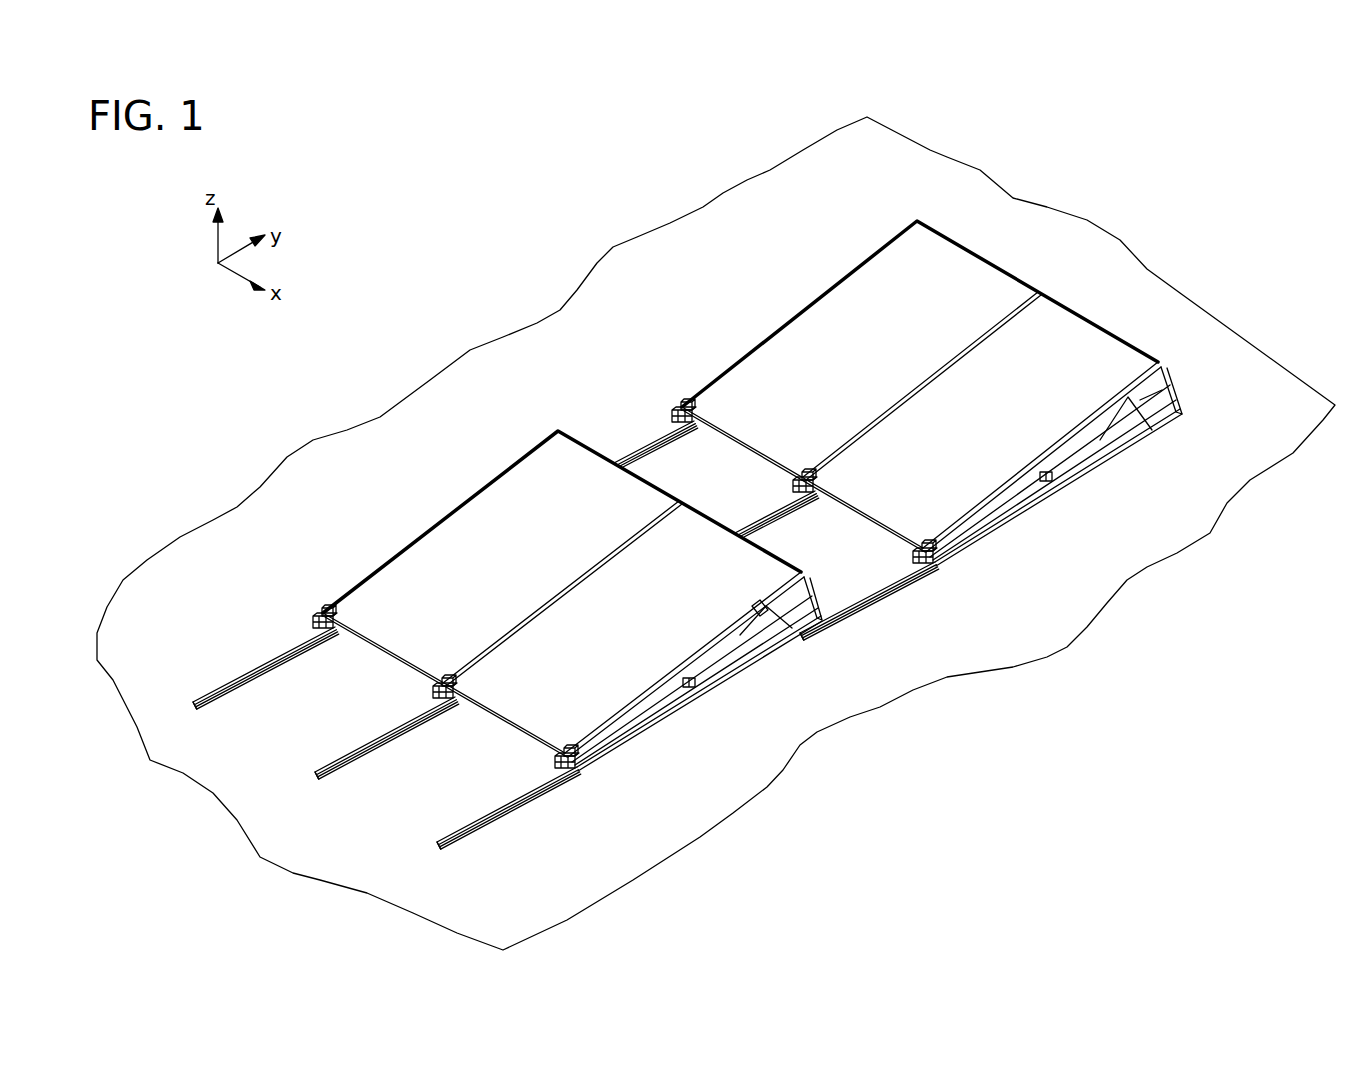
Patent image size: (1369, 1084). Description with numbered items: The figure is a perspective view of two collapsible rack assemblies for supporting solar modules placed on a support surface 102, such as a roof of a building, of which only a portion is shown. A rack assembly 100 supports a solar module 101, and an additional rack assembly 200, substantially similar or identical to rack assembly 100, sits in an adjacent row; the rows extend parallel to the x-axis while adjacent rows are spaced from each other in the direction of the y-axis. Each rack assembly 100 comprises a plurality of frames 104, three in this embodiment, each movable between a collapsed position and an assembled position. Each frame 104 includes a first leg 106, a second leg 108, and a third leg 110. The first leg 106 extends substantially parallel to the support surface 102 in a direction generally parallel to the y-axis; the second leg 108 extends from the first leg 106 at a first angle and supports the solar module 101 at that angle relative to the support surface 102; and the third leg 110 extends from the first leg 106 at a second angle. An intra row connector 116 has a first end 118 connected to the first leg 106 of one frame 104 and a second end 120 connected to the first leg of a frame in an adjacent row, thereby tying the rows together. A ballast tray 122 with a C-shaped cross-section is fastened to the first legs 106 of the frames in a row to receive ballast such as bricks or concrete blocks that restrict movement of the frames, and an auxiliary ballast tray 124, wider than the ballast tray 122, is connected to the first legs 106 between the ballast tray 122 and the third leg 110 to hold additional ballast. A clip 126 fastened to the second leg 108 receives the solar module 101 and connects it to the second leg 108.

The rack assembly 100 is at (333, 477).
The additional rack assembly 200 is at (826, 270).
The solar module 101 is at (795, 353).
The support surface 102 is at (1146, 528).
The frame 104 is at (740, 678).
The first leg 106 is at (643, 728).
The second leg 108 is at (765, 640).
The third leg 110 is at (813, 597).
The intra row connector 116 is at (262, 668).
The first end 118 is at (336, 630).
The second end 120 is at (195, 708).
The ballast tray 122 is at (690, 688).
The auxiliary ballast tray 124 is at (765, 628).
The clip 126 is at (321, 606).